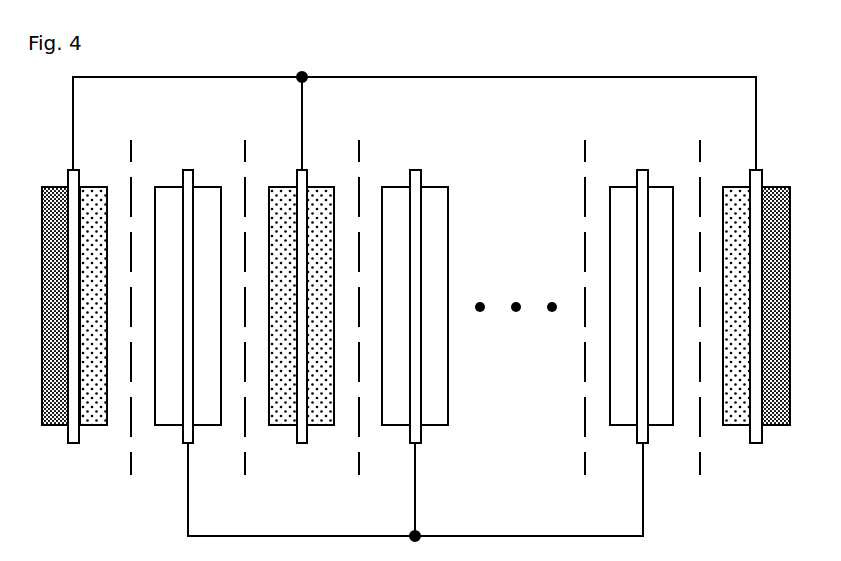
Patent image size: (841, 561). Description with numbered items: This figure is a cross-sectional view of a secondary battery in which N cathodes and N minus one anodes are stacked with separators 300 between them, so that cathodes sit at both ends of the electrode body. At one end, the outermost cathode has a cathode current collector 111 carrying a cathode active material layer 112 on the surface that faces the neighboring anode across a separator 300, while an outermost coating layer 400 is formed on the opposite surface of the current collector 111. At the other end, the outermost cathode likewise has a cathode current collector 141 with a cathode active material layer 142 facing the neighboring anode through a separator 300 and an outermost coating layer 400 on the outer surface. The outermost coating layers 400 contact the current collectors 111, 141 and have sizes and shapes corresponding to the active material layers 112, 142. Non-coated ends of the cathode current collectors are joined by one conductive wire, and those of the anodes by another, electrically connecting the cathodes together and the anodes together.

The outermost cathode current collector 111 is at (73, 443).
The cathode active material layer 112 is at (95, 425).
The cathode current collector 141 is at (755, 443).
The cathode active material layer 142 is at (733, 425).
The separator 300 is at (128, 213).
The outermost coating layer 400 is at (48, 425).